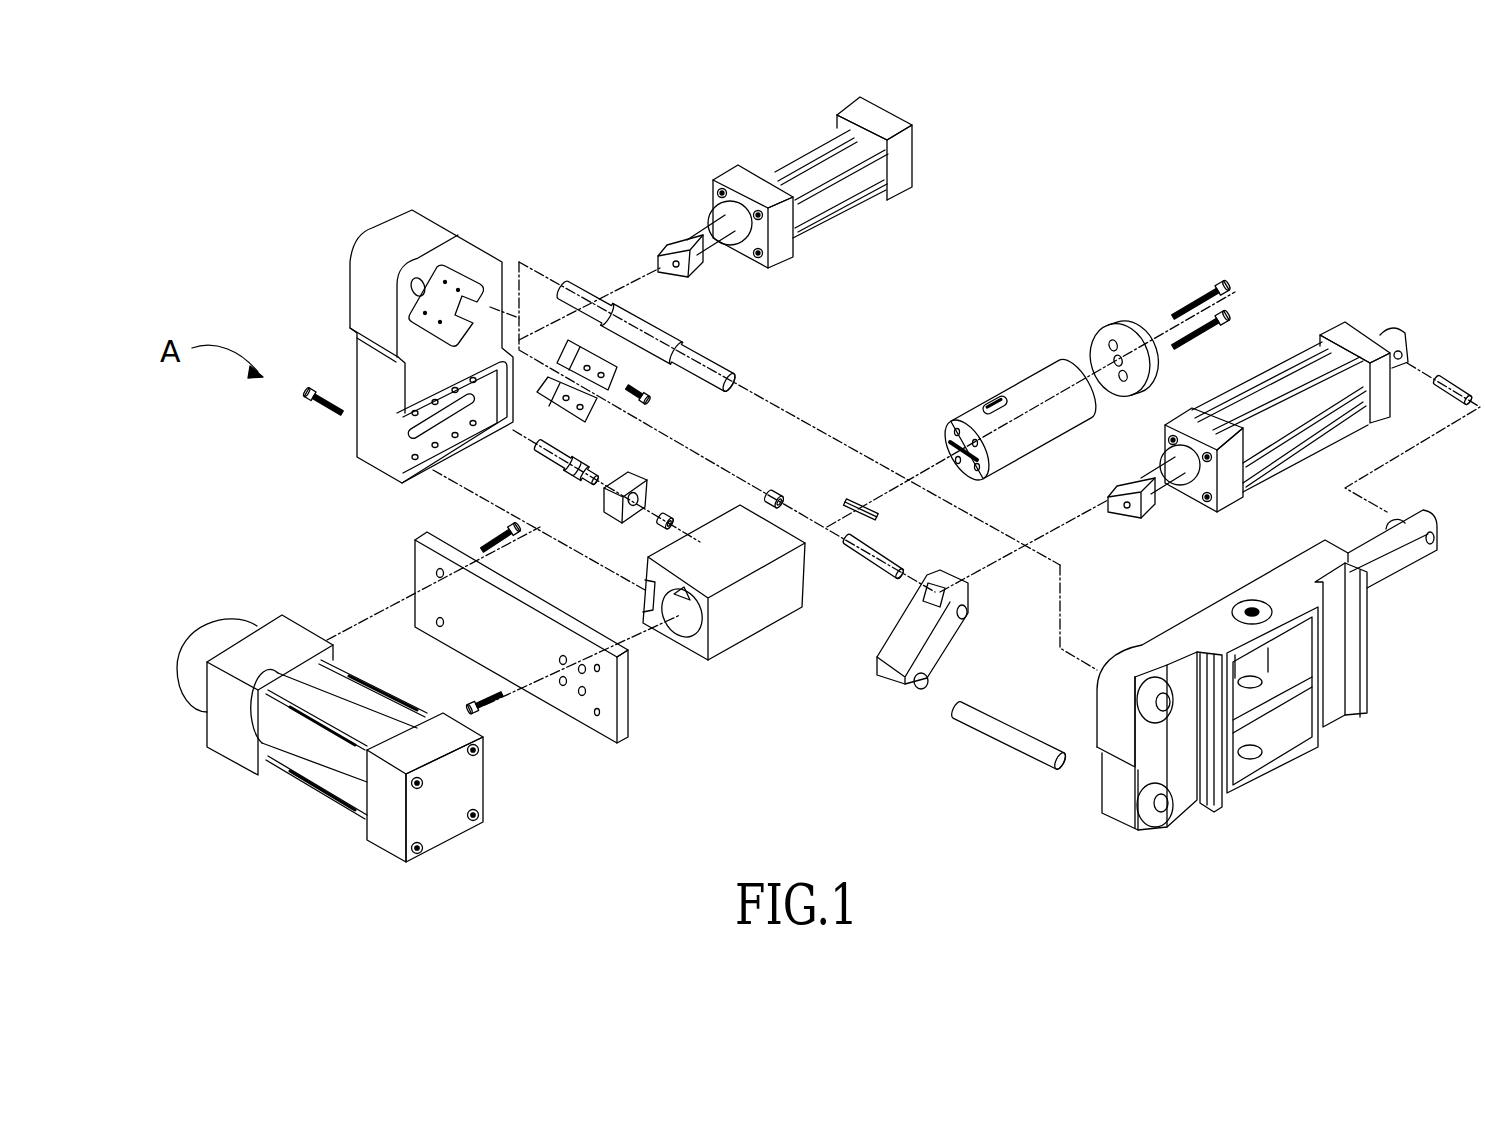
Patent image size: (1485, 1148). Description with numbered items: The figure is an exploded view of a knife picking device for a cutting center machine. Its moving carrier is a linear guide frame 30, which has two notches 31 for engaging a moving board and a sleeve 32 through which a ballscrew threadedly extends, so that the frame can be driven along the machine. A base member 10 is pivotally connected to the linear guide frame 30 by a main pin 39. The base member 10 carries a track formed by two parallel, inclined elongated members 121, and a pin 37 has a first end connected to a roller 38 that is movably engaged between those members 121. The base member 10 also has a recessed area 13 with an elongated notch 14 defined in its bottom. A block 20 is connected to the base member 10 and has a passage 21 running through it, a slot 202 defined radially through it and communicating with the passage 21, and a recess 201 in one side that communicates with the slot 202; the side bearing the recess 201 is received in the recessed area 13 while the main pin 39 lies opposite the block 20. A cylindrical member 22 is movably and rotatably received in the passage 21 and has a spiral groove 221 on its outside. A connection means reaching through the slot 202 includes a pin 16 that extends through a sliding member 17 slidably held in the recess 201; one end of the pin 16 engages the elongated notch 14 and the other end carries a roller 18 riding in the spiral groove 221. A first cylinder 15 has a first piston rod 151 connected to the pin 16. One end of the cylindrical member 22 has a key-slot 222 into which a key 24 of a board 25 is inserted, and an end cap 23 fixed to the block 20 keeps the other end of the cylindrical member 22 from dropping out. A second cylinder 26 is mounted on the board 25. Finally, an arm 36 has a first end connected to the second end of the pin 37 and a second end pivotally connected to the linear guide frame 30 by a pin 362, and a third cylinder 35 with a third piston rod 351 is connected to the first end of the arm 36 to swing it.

The base member 10 is at (372, 258).
The recessed area 13 is at (407, 477).
The elongated notch 14 is at (395, 441).
The first cylinder 15 is at (835, 190).
The first piston rod 151 is at (708, 253).
The pin 16 is at (557, 458).
The sliding member 17 is at (648, 483).
The roller 18 is at (660, 527).
The elongated members 121 is at (588, 407).
The block 20 is at (762, 622).
The recess 201 is at (645, 593).
The slot 202 is at (680, 615).
The passage 21 is at (687, 627).
The cylindrical member 22 is at (1043, 382).
The spiral groove 221 is at (990, 407).
The key-slot 222 is at (952, 440).
The end cap 23 is at (1125, 325).
The key 24 is at (853, 498).
The board 25 is at (423, 576).
The second cylinder 26 is at (307, 755).
The linear guide frame 30 is at (1172, 633).
The notches 31 is at (1186, 794).
The sleeve 32 is at (1260, 659).
The third cylinder 35 is at (1308, 382).
The third piston rod 351 is at (1157, 478).
The arm 36 is at (889, 682).
The pin 362 is at (983, 725).
The pin 37 is at (877, 553).
The roller 38 is at (775, 497).
The main pin 39 is at (590, 293).